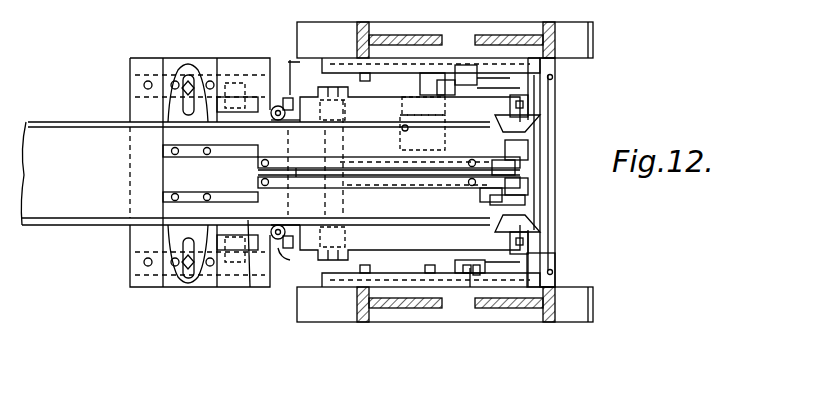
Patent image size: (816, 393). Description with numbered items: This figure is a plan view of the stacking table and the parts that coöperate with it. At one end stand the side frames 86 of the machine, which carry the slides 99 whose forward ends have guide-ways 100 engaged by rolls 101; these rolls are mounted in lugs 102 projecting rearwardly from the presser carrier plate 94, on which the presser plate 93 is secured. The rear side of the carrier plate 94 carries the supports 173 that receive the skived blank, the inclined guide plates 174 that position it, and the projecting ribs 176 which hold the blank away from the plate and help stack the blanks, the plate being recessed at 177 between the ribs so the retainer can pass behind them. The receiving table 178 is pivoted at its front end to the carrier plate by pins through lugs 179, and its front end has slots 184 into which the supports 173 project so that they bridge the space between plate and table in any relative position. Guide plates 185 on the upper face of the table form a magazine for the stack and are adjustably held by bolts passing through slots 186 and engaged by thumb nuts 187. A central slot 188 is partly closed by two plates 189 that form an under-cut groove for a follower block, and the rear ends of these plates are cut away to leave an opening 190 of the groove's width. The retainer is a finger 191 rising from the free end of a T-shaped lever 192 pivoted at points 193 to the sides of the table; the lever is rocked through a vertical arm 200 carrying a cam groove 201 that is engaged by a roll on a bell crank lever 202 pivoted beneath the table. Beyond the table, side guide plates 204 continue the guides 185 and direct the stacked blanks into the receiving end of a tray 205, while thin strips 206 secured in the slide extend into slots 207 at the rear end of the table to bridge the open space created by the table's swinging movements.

The frame 86 is at (349, 32).
The presser plate 93 is at (545, 258).
The presser carrier plate 94 is at (535, 277).
The slide 99 is at (470, 287).
The guide-way 100 is at (474, 292).
The roll 101 is at (478, 287).
The lug 102 is at (470, 260).
The support 173 is at (516, 200).
The guide plate 174 is at (530, 228).
The rib 176 is at (530, 183).
The recess 177 is at (528, 165).
The receiving table 178 is at (398, 242).
The lug 179 is at (525, 103).
The slot 184 is at (500, 192).
The guide plate 185 is at (375, 120).
The slot 186 is at (290, 95).
The thumb nut 187 is at (270, 88).
The slot 188 is at (298, 170).
The plate 189 is at (308, 188).
The opening 190 is at (235, 172).
The retaining finger 191 is at (535, 147).
The T-shaped lever 192 is at (336, 206).
The pivot 193 is at (306, 262).
The vertical arm 200 is at (462, 78).
The cam groove 201 is at (428, 78).
The bell crank lever 202 is at (452, 150).
The side guide plate 204 is at (178, 228).
The tray 205 is at (74, 132).
The strip 206 is at (192, 203).
The slot 207 is at (249, 250).